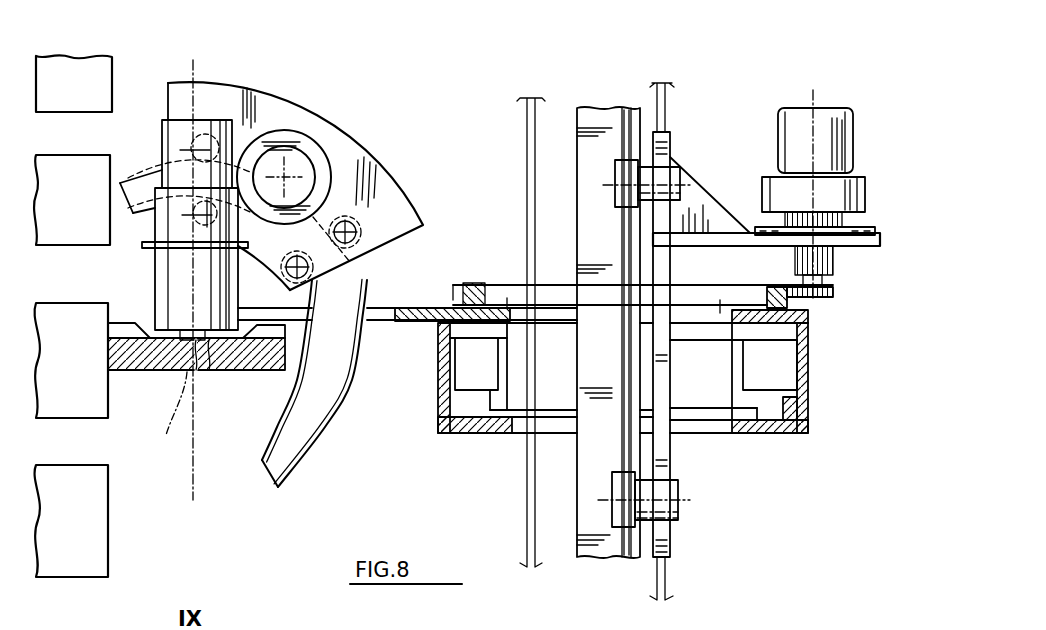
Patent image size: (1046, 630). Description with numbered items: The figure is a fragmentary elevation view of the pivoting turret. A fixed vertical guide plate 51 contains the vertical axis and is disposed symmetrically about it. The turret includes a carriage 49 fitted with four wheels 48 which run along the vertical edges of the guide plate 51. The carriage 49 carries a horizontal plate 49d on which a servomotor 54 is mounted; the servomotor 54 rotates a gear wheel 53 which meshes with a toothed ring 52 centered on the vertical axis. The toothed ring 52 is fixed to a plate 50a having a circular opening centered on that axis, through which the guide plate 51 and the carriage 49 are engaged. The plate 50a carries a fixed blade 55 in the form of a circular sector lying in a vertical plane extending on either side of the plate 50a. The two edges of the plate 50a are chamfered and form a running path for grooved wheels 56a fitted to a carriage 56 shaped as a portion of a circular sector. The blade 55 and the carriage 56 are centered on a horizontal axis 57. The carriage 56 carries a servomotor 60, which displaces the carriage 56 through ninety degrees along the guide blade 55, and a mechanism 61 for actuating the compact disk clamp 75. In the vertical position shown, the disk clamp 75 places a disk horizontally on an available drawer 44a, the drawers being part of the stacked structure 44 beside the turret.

The frame members 44 is at (72, 417).
The drawer 44a is at (255, 363).
The wheels 48 is at (607, 130).
The carriage 49 is at (667, 452).
The horizontal plate 49d is at (715, 225).
The plate 50a is at (407, 323).
The fixed vertical guide plate 51 is at (618, 460).
The toothed ring 52 is at (463, 280).
The gear wheel 53 is at (827, 300).
The servomotor 54 is at (828, 118).
The fixed blade 55 is at (302, 452).
The carriage 56 is at (378, 187).
The grooved wheels 56a is at (367, 247).
The horizontal axis 57 is at (164, 416).
The servomotor 60 is at (312, 147).
The mechanism 61 is at (178, 287).
The disk clamp 75 is at (207, 372).